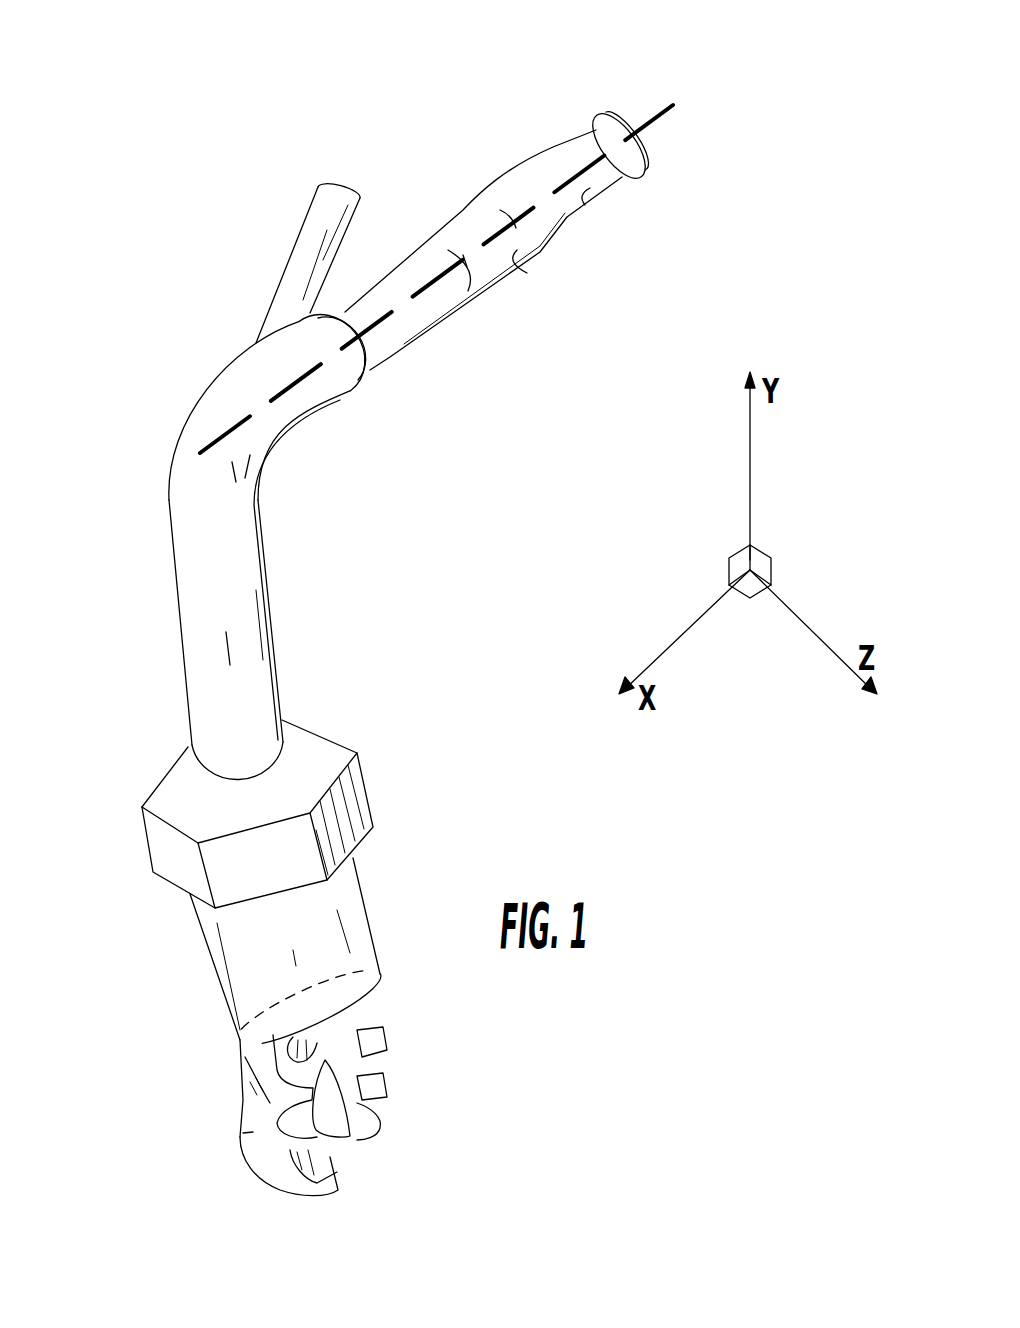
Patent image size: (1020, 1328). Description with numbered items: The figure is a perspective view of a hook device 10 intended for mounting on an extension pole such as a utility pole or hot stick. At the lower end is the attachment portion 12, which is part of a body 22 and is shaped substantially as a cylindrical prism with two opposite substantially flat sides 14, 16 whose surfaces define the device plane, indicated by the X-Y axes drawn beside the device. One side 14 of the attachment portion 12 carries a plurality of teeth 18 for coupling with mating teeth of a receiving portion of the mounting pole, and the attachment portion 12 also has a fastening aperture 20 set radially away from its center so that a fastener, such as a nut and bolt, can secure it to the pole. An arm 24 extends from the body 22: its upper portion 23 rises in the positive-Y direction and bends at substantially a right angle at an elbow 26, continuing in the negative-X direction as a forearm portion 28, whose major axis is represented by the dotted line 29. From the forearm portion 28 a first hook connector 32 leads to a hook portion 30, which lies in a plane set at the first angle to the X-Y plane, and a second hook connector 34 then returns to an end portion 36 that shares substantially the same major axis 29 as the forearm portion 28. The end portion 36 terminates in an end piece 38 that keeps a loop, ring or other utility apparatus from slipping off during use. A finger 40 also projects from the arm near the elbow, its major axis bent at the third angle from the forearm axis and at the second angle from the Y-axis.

The hook device 10 is at (240, 272).
The attachment portion 12 is at (232, 1097).
The flat side 14 is at (419, 1078).
The flat side 16 is at (235, 1137).
The teeth 18 is at (377, 1033).
The fastening aperture 20 is at (347, 1152).
The body 22 is at (178, 978).
The upper portion 23 is at (237, 525).
The arm 24 is at (124, 611).
The elbow 26 is at (190, 446).
The forearm portion 28 is at (337, 383).
The major axis of the forearm portion 29 is at (585, 165).
The hook portion 30 is at (405, 340).
The first hook connector 32 is at (387, 316).
The second hook connector 34 is at (522, 250).
The end portion 36 is at (578, 190).
The end piece 38 is at (628, 114).
The finger 40 is at (330, 190).